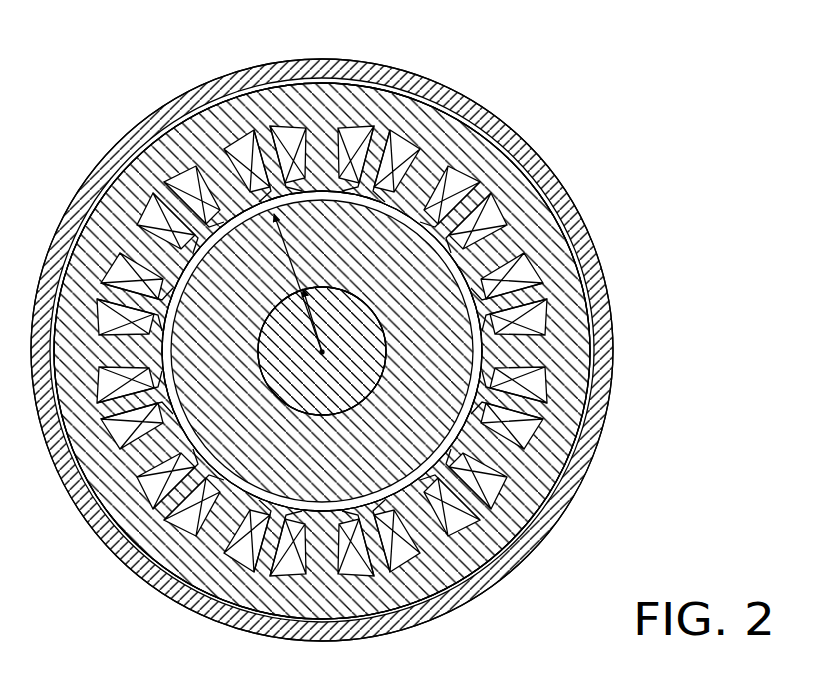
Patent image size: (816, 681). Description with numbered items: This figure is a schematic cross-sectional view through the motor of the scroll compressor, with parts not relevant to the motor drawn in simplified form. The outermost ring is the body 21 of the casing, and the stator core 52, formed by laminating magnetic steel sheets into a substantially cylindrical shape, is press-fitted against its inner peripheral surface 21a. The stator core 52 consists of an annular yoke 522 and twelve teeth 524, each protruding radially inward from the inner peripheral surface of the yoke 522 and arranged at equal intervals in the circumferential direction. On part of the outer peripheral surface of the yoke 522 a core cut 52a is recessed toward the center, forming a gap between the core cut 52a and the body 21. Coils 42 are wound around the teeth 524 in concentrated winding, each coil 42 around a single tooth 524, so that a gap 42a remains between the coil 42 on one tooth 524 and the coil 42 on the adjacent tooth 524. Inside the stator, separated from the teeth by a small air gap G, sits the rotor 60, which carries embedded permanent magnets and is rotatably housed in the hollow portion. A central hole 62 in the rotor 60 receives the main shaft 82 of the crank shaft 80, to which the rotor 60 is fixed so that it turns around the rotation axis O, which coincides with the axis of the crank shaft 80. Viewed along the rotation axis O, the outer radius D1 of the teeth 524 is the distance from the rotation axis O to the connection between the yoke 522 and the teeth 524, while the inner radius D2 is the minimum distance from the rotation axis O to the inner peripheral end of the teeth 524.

The body 21 is at (548, 153).
The inner peripheral surface 21a is at (497, 128).
The stator core 52 is at (576, 299).
The yoke 522 is at (545, 234).
The core cut 52a is at (177, 107).
The teeth 524 is at (322, 185).
The coils 42 is at (247, 137).
The gap 42a is at (263, 132).
The rotor 60 is at (450, 353).
The central hole 62 is at (261, 362).
The crank shaft 80 is at (272, 406).
The main shaft 82 is at (323, 418).
The air gap G is at (463, 438).
The rotation axis O is at (313, 355).
The outer radius of the teeth D1 is at (275, 283).
The inner radius of the teeth D2 is at (314, 299).